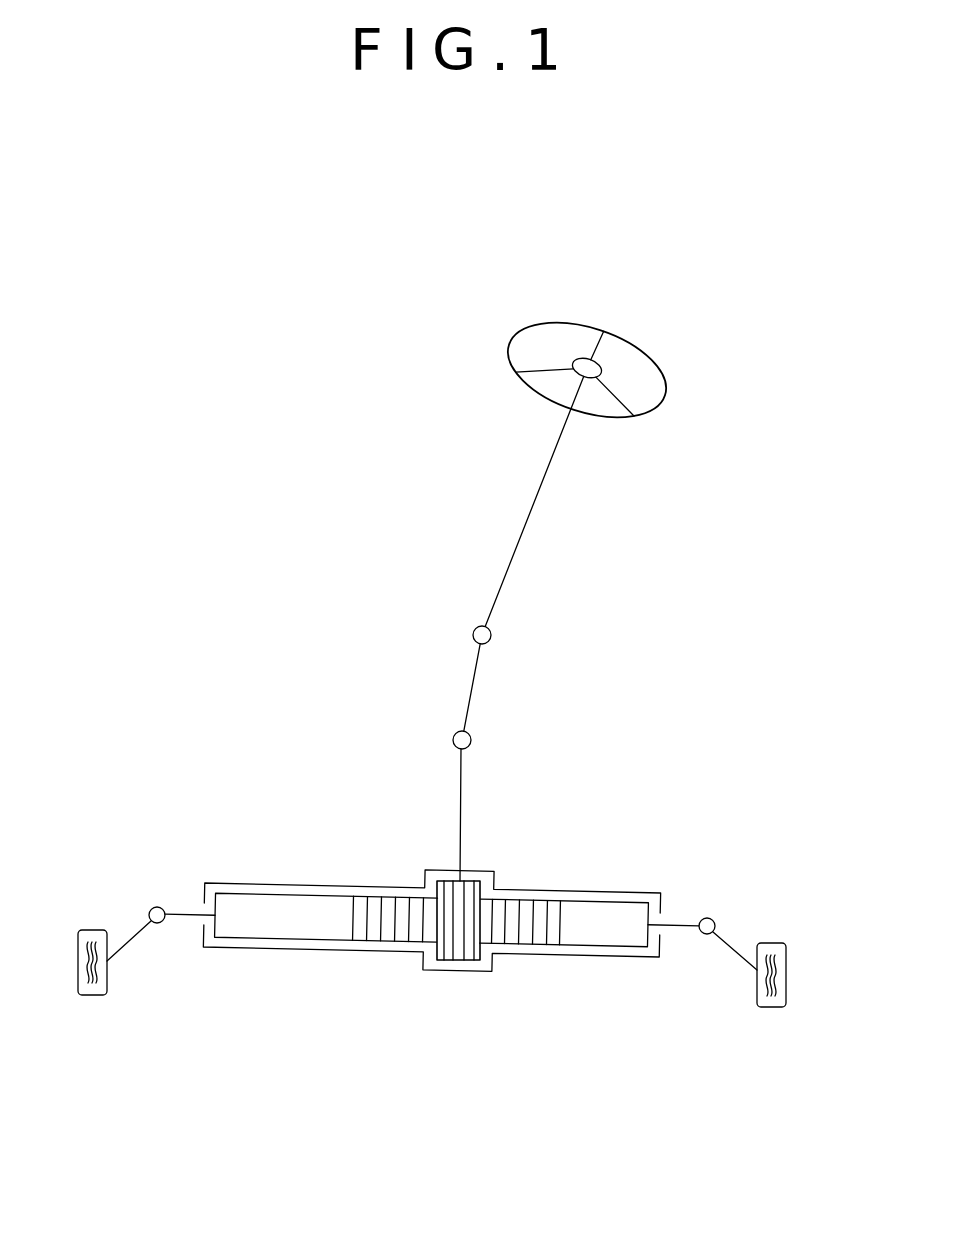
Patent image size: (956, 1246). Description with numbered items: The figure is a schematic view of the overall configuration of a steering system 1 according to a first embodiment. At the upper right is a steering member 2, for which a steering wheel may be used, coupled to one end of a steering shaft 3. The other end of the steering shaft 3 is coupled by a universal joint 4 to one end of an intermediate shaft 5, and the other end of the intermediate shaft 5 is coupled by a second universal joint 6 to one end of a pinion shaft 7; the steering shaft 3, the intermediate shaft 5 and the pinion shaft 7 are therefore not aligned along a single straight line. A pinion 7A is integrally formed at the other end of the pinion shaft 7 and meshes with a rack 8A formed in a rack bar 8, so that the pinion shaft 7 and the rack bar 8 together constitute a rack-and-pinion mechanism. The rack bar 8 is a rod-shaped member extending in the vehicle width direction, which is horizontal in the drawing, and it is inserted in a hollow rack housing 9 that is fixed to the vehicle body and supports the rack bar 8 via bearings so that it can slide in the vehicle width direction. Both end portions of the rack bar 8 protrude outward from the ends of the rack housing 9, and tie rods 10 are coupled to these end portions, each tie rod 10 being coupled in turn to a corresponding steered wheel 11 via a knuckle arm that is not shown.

The steering system 1 is at (688, 325).
The steering member 2 is at (576, 323).
The steering shaft 3 is at (543, 480).
The universal joint 4 is at (492, 636).
The intermediate shaft 5 is at (470, 686).
The universal joint 6 is at (471, 742).
The pinion shaft 7 is at (461, 815).
The pinion 7A is at (463, 962).
The rack bar 8 is at (522, 947).
The rack 8A is at (403, 934).
The rack housing 9 is at (345, 884).
The tie rod 10 is at (137, 935).
The steered wheel 11 is at (92, 996).